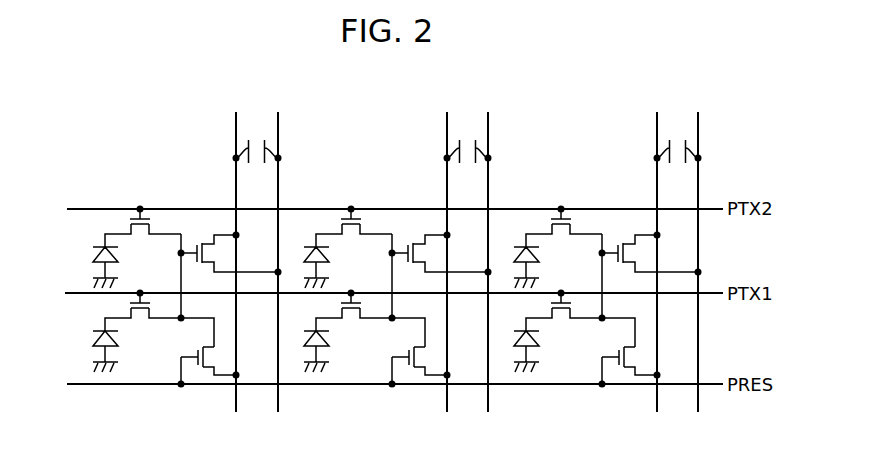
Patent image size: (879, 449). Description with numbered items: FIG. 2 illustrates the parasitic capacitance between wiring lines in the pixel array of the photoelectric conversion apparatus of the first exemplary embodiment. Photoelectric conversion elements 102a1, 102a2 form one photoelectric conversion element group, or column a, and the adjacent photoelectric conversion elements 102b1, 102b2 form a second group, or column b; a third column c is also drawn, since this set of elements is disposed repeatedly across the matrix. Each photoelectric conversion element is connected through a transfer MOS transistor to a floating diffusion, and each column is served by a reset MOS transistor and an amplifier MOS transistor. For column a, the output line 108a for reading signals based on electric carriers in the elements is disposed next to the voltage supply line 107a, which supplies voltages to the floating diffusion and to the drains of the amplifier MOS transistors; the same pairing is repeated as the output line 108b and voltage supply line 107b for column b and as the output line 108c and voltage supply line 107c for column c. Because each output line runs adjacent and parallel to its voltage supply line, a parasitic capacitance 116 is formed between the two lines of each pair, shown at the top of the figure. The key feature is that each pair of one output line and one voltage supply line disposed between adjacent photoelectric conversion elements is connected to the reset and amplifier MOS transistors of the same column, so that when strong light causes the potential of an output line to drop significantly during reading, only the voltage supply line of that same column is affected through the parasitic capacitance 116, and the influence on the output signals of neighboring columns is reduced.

The photoelectric conversion element 102a1 is at (97, 257).
The photoelectric conversion element 102a2 is at (97, 340).
The photoelectric conversion element 102b1 is at (329, 258).
The photoelectric conversion element 102b2 is at (329, 338).
The output line 107a is at (279, 120).
The output line 107b is at (489, 120).
The output line 107c is at (699, 120).
The voltage supply line 108a is at (235, 120).
The voltage supply line 108b is at (446, 120).
The voltage supply line 108c is at (656, 120).
The parasitic capacitance 116 is at (266, 148).